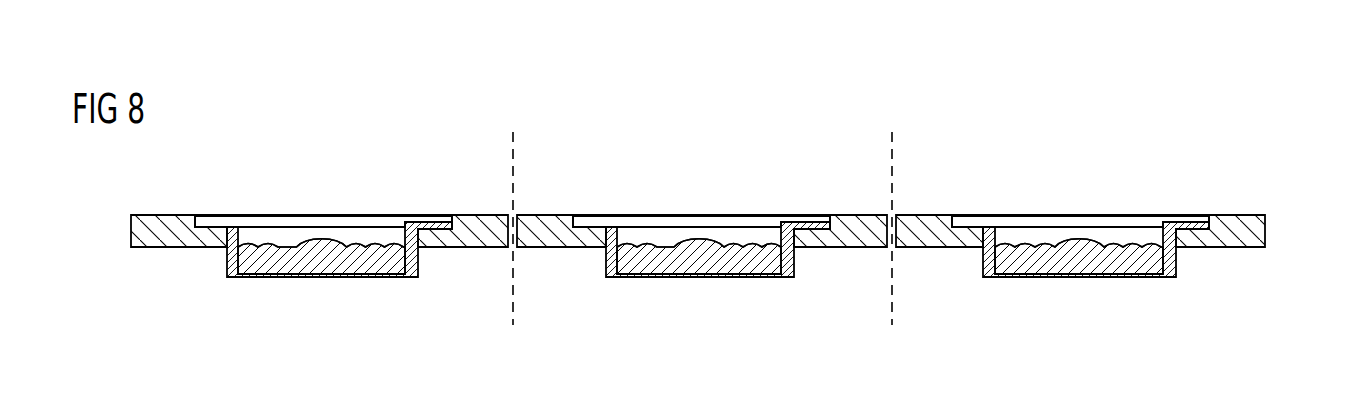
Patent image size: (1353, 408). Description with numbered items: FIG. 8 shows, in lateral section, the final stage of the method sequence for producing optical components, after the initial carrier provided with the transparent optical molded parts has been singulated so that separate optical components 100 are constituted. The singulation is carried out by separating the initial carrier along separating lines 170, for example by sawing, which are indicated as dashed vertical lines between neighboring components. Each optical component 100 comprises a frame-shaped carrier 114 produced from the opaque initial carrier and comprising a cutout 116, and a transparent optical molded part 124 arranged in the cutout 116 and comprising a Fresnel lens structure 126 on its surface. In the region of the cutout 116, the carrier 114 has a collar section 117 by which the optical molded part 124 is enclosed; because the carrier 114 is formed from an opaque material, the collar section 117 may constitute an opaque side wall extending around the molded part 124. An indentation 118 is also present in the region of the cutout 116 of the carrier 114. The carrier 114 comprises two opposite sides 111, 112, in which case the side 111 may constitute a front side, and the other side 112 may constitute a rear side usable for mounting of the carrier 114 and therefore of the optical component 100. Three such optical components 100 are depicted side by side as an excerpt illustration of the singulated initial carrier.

The optical component 100 is at (300, 128).
The side 111 is at (1223, 247).
The side 112 is at (1225, 215).
The carrier 114 is at (138, 228).
The cutout 116 is at (278, 235).
The collar section 117 is at (421, 262).
The indentation 118 is at (217, 216).
The optical molded part 124 is at (322, 262).
The Fresnel lens structure 126 is at (328, 242).
The separating line 170 is at (513, 150).